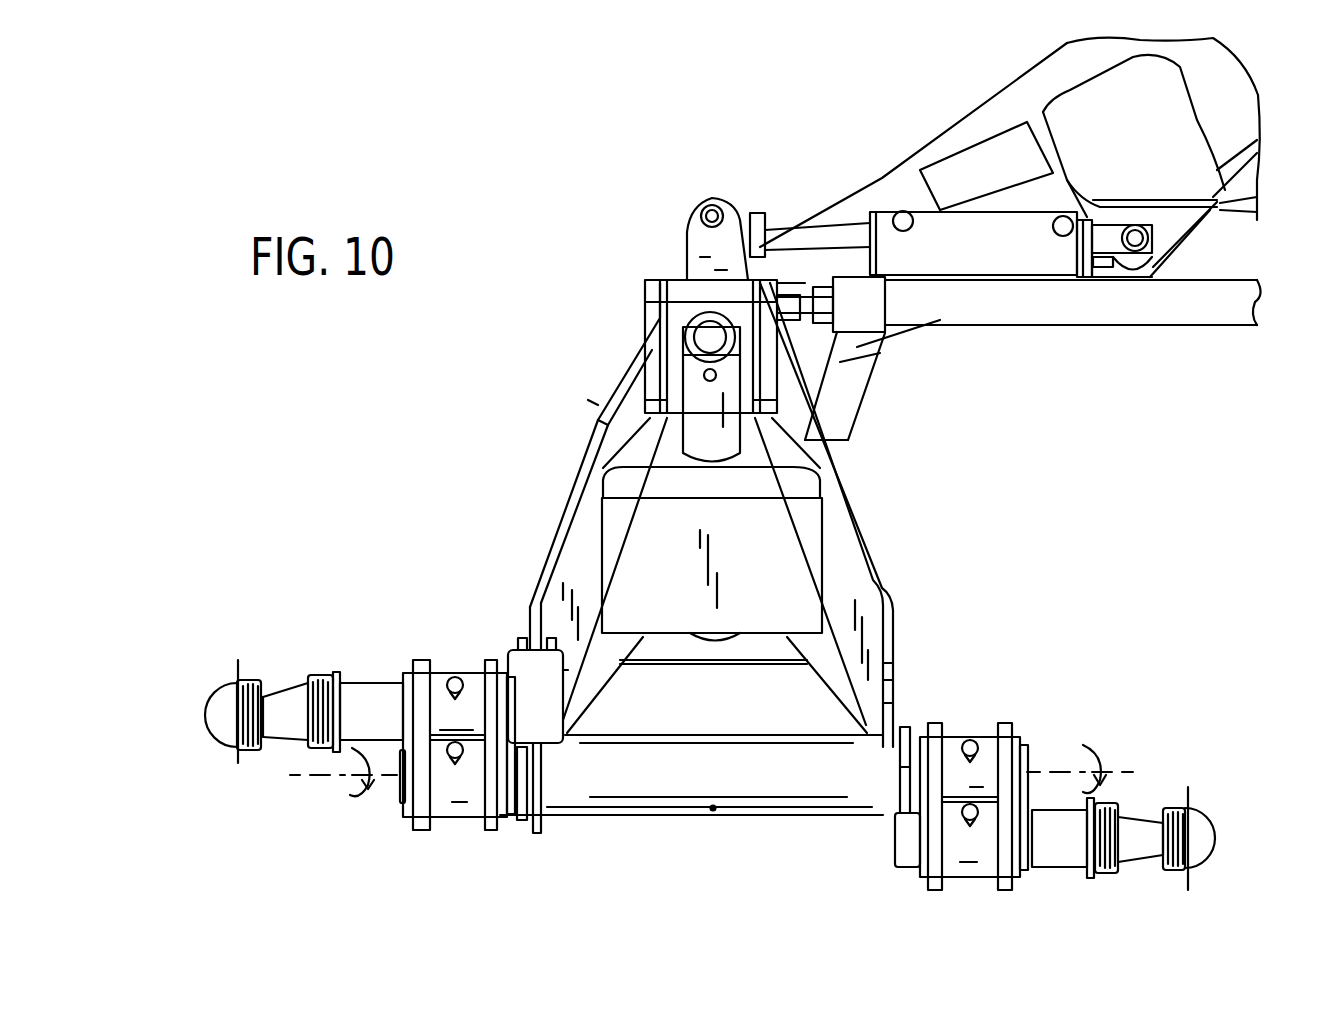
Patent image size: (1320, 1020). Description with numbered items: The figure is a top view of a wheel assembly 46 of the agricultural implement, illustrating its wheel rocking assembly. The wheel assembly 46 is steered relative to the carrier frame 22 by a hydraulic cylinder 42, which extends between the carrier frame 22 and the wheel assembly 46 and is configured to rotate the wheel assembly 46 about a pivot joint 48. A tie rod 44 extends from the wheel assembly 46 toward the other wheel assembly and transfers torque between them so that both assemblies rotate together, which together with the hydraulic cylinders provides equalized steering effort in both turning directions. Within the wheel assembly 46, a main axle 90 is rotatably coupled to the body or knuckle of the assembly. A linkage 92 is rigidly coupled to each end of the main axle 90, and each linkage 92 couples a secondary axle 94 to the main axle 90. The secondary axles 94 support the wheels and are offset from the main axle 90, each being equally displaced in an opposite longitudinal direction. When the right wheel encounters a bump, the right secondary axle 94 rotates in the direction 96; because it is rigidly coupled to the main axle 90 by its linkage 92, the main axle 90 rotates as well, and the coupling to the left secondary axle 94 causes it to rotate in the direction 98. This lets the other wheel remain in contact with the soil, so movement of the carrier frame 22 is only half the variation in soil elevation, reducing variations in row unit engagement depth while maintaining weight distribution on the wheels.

The carrier frame 22 is at (1005, 108).
The hydraulic cylinder 42 is at (980, 247).
The tie rod 44 is at (1165, 312).
The wheel assembly 46 is at (862, 527).
The pivot joint 48 is at (708, 335).
The main axle 90 is at (780, 810).
The linkage 92 is at (420, 822).
The secondary axle 94 is at (370, 690).
The direction 96 is at (1098, 760).
The direction 98 is at (355, 785).